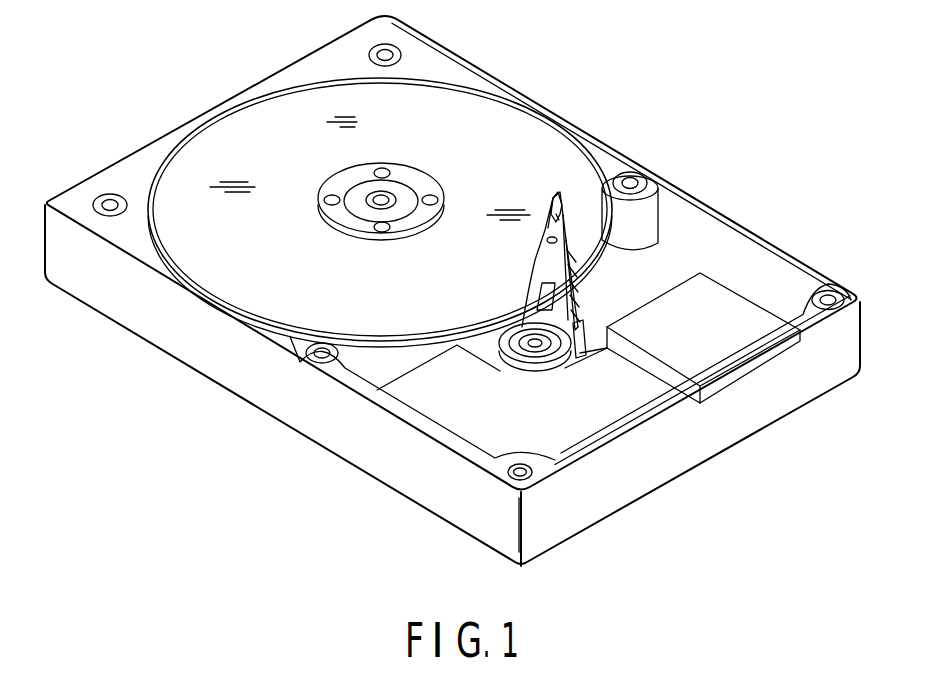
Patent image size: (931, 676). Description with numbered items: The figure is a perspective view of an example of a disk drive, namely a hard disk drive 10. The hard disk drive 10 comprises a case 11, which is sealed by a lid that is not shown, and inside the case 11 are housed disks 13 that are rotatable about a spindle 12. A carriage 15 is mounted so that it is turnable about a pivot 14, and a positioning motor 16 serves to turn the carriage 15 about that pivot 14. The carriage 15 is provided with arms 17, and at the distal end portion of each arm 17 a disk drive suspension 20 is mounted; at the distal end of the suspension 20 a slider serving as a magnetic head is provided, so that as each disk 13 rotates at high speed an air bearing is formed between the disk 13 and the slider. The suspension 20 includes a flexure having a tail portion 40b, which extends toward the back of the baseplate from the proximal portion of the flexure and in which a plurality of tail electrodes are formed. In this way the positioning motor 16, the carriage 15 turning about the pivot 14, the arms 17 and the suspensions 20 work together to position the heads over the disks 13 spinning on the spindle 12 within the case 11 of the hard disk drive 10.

The hard disk drive 10 is at (741, 103).
The case 11 is at (243, 388).
The spindle 12 is at (395, 188).
The disk 13 is at (497, 132).
The pivot 14 is at (545, 352).
The carriage 15 is at (556, 320).
The positioning motor 16 is at (458, 427).
The arm 17 is at (557, 260).
The disk drive suspension 20 is at (566, 205).
The tail portion 40b is at (580, 320).